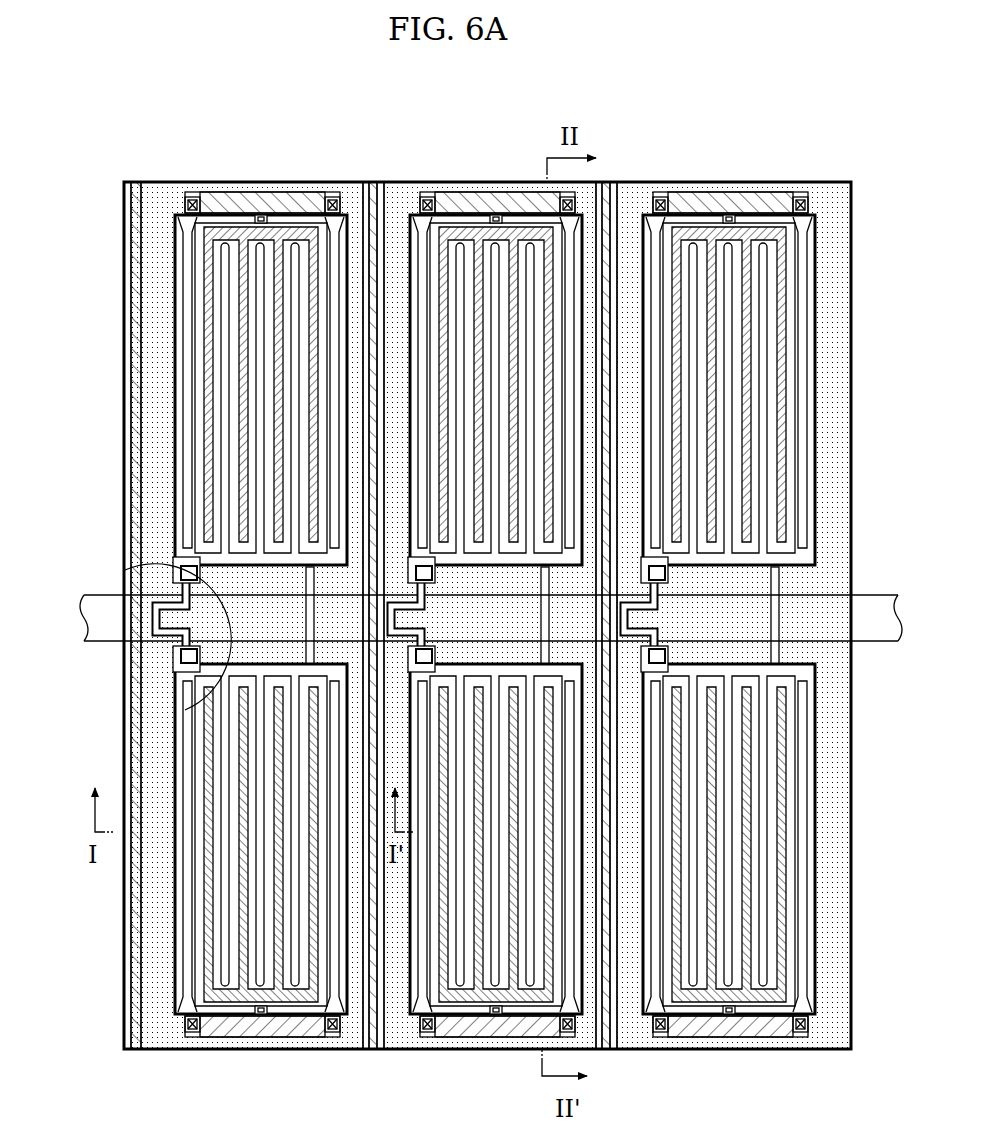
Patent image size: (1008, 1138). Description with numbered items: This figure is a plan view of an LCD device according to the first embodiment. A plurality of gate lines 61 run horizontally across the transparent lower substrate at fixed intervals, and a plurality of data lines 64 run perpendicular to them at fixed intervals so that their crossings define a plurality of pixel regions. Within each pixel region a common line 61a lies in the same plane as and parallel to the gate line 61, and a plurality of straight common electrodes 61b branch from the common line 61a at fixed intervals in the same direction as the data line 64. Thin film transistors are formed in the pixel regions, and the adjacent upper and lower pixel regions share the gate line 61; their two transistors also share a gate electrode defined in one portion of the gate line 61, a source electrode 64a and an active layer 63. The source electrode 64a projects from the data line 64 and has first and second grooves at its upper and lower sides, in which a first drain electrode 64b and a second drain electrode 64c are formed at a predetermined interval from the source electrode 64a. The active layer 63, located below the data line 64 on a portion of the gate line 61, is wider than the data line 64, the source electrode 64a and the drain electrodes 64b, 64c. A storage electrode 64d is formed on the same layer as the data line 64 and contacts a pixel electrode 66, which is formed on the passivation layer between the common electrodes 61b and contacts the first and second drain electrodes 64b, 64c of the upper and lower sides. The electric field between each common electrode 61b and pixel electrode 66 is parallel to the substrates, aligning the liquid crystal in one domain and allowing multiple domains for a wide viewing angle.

The gate line 61 is at (88, 592).
The common line 61a is at (300, 233).
The common electrode 61b is at (313, 257).
The active layer 63 is at (184, 712).
The data line 64 is at (136, 527).
The source electrode 64a is at (150, 633).
The first drain electrode 64b is at (173, 571).
The second drain electrode 64c is at (174, 668).
The storage electrode 64d is at (250, 195).
The pixel electrode 66 is at (230, 338).